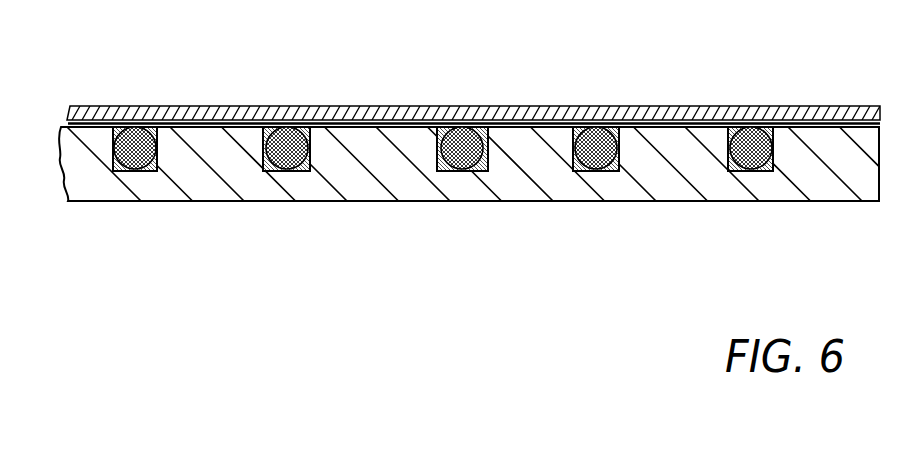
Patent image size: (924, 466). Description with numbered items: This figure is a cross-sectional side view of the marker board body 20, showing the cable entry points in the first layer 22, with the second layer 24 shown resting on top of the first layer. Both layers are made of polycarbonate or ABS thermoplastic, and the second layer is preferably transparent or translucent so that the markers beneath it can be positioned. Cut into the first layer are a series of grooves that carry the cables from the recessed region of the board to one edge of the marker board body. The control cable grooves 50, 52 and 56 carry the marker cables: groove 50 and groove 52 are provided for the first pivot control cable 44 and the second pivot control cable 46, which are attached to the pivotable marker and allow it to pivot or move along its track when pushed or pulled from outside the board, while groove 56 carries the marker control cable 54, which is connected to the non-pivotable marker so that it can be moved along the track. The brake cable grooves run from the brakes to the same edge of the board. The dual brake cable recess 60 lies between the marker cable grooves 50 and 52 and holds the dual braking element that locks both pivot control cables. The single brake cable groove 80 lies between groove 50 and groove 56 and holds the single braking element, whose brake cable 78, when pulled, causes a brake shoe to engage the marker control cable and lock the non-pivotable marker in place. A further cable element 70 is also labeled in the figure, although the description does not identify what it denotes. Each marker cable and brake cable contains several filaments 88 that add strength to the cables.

The marker board body 20 is at (522, 82).
The first layer 22 is at (213, 202).
The second layer 24 is at (226, 105).
The first pivot control cable 44 is at (461, 140).
The second pivot control cable 46 is at (764, 142).
The groove 50 is at (447, 149).
The groove 52 is at (754, 146).
The marker control cable 54 is at (133, 143).
The groove 56 is at (117, 155).
The recess 60 is at (583, 147).
The O-ring seal 70 is at (596, 140).
The brake cable 78 is at (282, 140).
The groove 80 is at (295, 151).
The filaments 88 is at (774, 146).